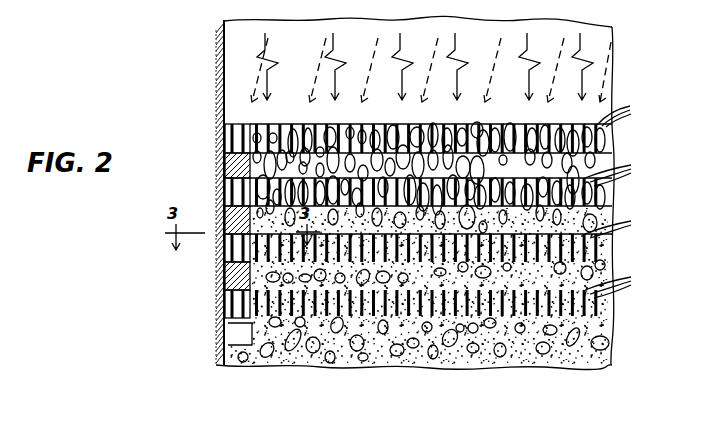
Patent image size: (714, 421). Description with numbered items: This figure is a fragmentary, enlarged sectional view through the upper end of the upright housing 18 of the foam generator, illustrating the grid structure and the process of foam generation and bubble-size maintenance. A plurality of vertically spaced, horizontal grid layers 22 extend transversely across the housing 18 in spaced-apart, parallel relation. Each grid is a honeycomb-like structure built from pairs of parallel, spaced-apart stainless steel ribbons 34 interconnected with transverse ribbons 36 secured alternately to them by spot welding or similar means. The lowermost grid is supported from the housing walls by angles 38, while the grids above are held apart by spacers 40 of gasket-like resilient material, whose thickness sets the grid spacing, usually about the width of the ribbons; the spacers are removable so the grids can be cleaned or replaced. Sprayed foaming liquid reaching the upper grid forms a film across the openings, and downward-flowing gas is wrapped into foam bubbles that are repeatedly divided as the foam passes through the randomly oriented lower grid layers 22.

The upright housing 18 is at (217, 85).
The spacers 40 is at (233, 119).
The grid layers 22 is at (614, 144).
The transverse ribbons 36 is at (618, 198).
The parallel ribbons 34 is at (560, 124).
The angles 38 is at (232, 340).